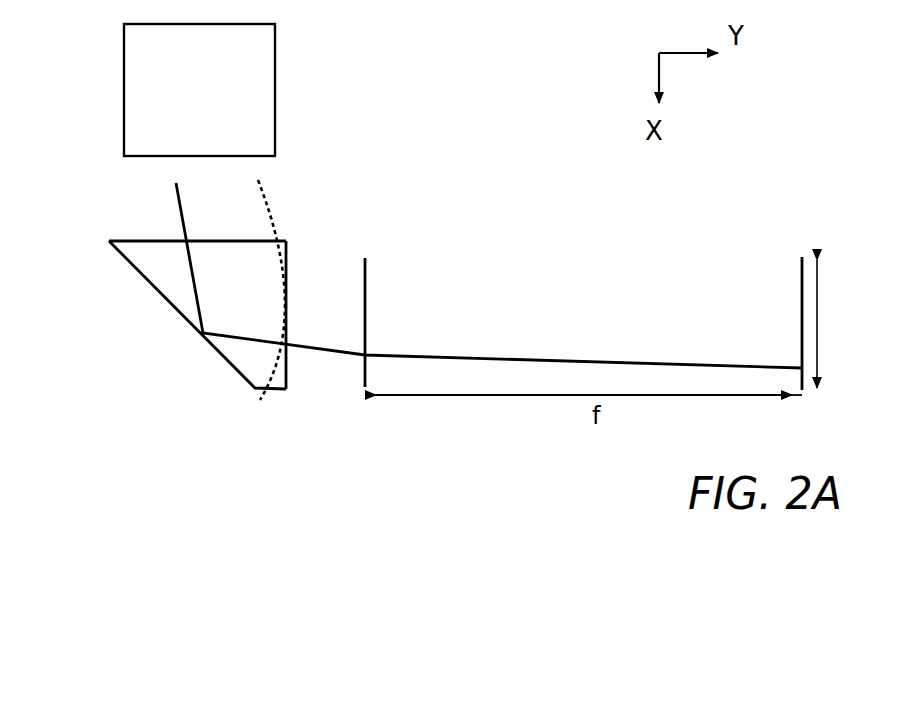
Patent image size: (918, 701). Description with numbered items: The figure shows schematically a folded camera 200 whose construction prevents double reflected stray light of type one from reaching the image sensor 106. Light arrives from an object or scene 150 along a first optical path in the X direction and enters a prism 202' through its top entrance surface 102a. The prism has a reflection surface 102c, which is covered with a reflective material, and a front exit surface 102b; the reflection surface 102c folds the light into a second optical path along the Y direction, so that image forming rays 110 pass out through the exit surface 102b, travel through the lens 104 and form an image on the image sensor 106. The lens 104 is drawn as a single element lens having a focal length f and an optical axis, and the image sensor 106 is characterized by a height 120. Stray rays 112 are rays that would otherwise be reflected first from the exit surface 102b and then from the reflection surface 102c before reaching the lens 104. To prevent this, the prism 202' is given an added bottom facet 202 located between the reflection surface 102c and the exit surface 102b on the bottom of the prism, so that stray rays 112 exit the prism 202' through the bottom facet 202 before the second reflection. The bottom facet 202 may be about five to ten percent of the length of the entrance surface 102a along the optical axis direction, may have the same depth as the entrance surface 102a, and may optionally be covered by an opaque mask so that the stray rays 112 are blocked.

The folded camera 200 is at (545, 36).
The object or scene 150 is at (176, 140).
The image forming rays 110 is at (173, 190).
The stray rays 112 is at (270, 197).
The entrance surface 102a is at (109, 239).
The exit surface 102b is at (287, 258).
The reflection surface 102c is at (238, 375).
The prism 202' is at (103, 286).
The bottom facet 202 is at (242, 428).
The lens 104 is at (363, 382).
The image sensor 106 is at (803, 255).
The height 120 is at (817, 313).